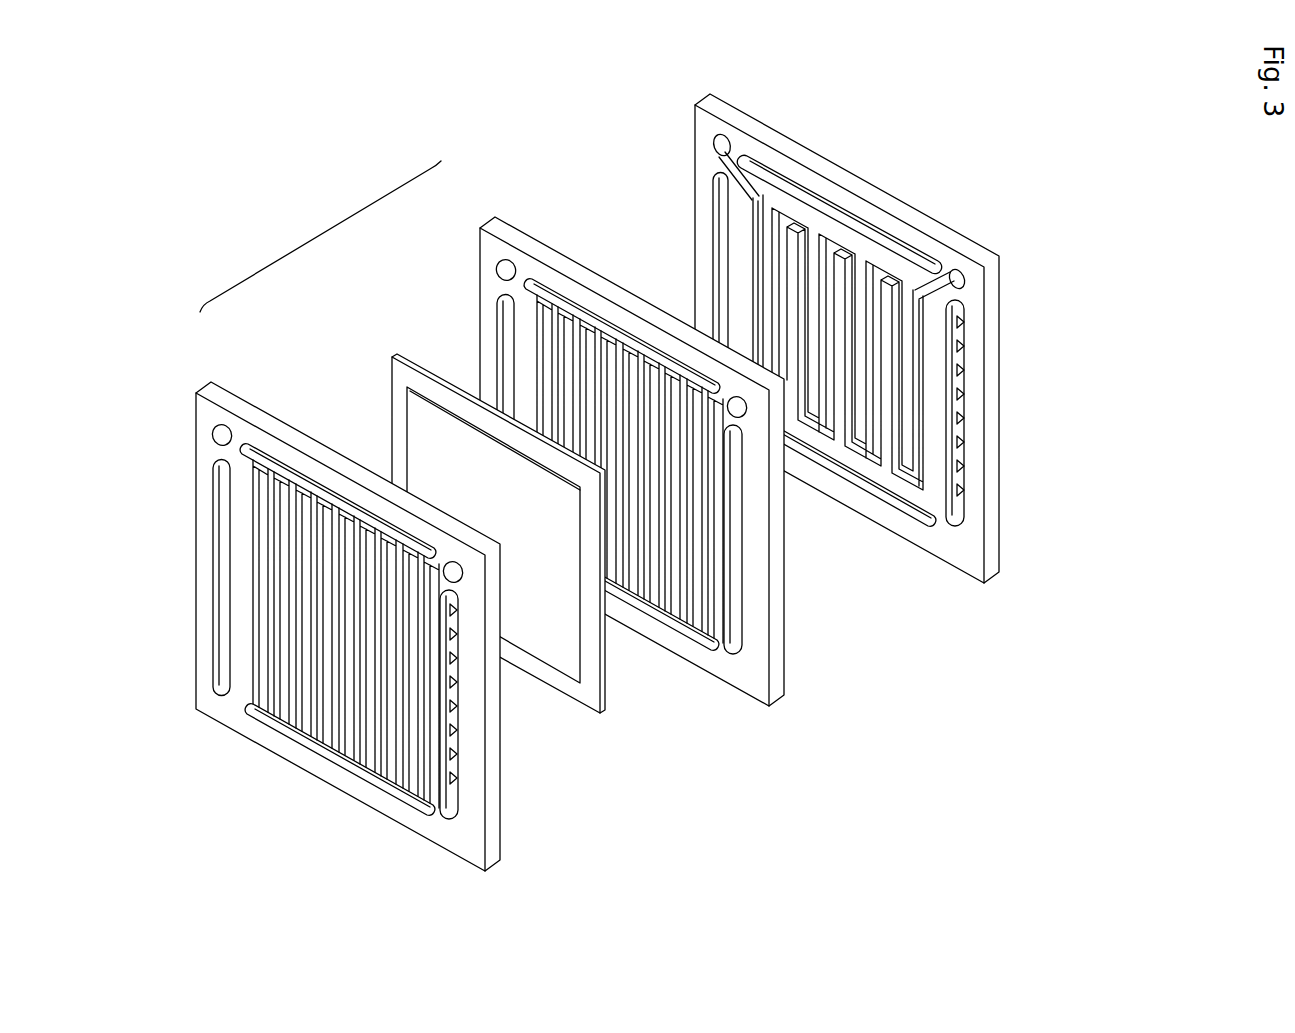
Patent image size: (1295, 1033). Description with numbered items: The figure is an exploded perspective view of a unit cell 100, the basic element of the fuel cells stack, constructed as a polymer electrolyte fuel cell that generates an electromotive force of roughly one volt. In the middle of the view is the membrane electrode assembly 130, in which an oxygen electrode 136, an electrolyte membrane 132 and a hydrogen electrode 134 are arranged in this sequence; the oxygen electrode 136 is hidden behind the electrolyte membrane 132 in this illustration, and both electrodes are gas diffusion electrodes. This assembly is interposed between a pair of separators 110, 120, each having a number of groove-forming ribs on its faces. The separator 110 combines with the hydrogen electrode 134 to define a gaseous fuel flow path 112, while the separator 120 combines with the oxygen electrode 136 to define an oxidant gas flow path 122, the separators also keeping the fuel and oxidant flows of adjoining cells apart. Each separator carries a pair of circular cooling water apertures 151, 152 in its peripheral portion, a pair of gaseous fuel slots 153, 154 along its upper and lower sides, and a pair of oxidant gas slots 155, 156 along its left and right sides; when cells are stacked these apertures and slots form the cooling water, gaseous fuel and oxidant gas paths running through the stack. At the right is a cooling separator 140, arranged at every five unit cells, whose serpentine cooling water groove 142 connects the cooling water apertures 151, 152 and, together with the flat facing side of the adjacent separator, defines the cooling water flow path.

The unit cell 100 is at (320, 236).
The separator 110 is at (490, 856).
The gaseous fuel flow path 112 is at (464, 757).
The separator 120 is at (776, 693).
The oxidant gas flow path 122 is at (640, 345).
The membrane electrode assembly 130 is at (604, 718).
The electrolyte membrane 132 is at (425, 365).
The hydrogen electrode 134 is at (417, 433).
The oxygen electrode 136 is at (443, 427).
The cooling separator 140 is at (960, 560).
The serpentine cooling water groove 142 is at (922, 356).
The cooling water aperture 151 is at (226, 430).
The cooling water aperture 152 is at (457, 577).
The gaseous fuel slot 153 is at (835, 210).
The gaseous fuel slot 154 is at (301, 745).
The oxidant gas slot 155 is at (222, 540).
The oxidant gas slot 156 is at (746, 600).